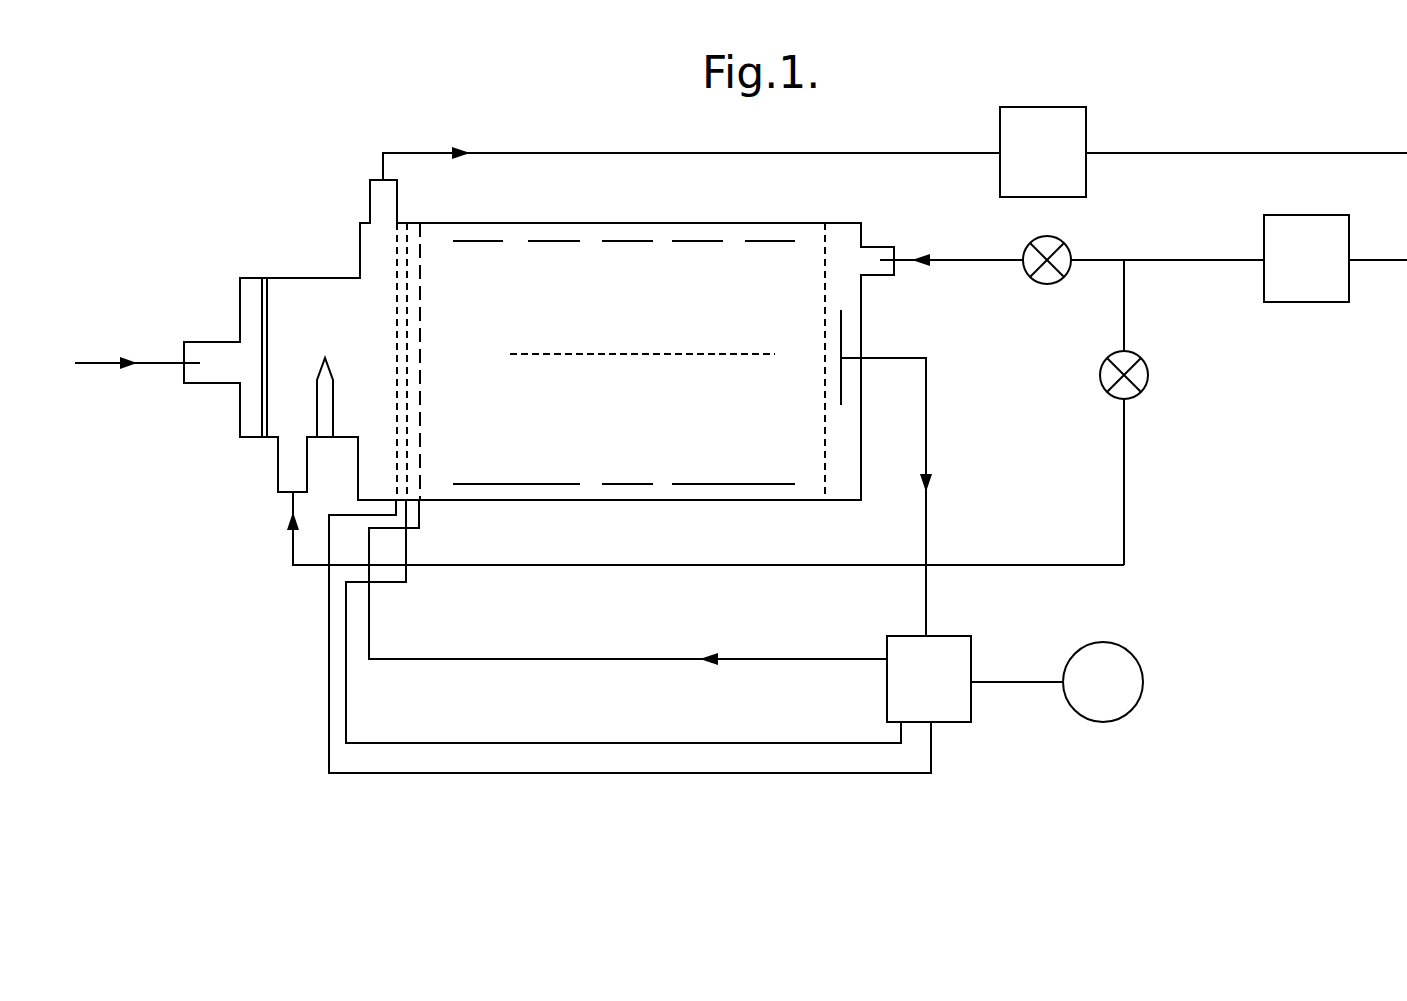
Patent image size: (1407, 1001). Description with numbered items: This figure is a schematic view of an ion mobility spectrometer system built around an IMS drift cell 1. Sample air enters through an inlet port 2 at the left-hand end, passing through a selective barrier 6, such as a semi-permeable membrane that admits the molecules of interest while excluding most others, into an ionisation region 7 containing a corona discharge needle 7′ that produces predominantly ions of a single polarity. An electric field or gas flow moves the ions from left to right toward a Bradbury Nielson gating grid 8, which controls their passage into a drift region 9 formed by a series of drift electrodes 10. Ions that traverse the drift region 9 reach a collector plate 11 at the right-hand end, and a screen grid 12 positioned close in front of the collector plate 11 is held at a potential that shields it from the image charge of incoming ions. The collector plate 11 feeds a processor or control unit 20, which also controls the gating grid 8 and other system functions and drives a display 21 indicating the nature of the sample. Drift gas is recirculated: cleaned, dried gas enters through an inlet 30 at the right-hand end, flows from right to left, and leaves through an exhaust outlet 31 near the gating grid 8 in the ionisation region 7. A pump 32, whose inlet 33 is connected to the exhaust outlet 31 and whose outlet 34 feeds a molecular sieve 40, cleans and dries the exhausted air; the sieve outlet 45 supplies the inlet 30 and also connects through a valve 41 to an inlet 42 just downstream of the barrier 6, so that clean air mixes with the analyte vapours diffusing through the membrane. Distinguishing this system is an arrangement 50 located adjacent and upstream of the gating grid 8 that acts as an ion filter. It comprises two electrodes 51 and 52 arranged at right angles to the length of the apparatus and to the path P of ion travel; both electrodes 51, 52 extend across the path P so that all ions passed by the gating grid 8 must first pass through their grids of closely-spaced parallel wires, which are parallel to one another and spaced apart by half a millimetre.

The IMS drift cell 1 is at (731, 178).
The inlet port 2 is at (210, 340).
The selective barrier 6 is at (260, 322).
The ionisation region 7 is at (326, 302).
The corona discharge needle 7′ is at (335, 413).
The Bradbury Nielson gating grid 8 is at (420, 314).
The drift region 9 is at (578, 265).
The drift electrodes 10 is at (548, 485).
The collector plate 11 is at (843, 339).
The screen grid 12 is at (826, 434).
The processor or control unit 20 is at (900, 688).
The display 21 is at (1132, 672).
The inlet 30 is at (877, 245).
The exhaust outlet 31 is at (370, 193).
The pump 32 is at (1072, 120).
The pump inlet 33 is at (999, 150).
The pump outlet 34 is at (1087, 155).
The molecular sieve 40 is at (1322, 273).
The valve 41 is at (1148, 375).
The inlet 42 is at (278, 462).
The sieve outlet 45 is at (1263, 258).
The ion filter arrangement 50 is at (412, 284).
The first electrode 51 is at (410, 402).
The second electrode 52 is at (407, 447).
The path of travel of the ions P is at (634, 353).